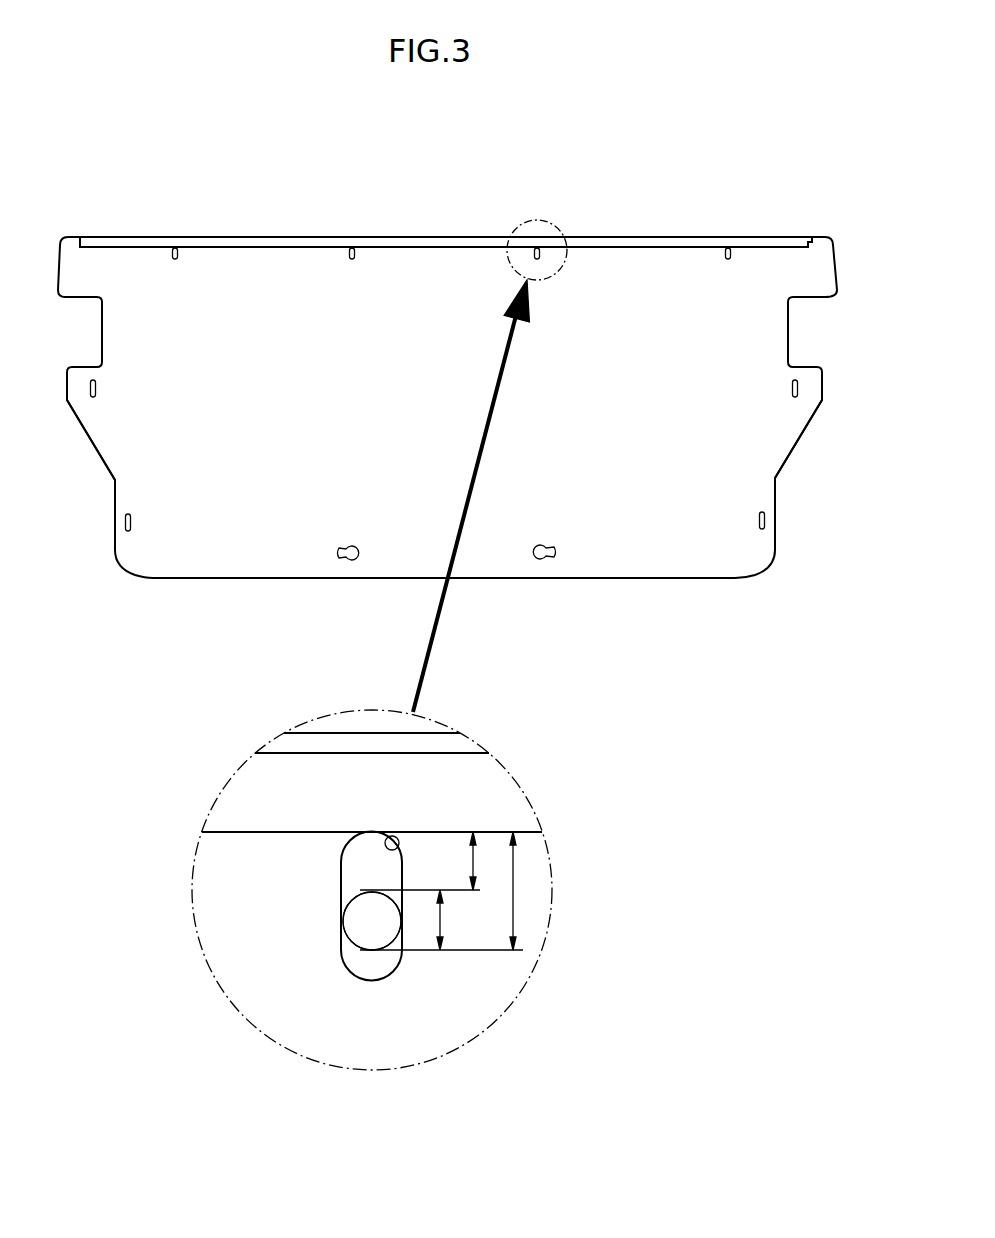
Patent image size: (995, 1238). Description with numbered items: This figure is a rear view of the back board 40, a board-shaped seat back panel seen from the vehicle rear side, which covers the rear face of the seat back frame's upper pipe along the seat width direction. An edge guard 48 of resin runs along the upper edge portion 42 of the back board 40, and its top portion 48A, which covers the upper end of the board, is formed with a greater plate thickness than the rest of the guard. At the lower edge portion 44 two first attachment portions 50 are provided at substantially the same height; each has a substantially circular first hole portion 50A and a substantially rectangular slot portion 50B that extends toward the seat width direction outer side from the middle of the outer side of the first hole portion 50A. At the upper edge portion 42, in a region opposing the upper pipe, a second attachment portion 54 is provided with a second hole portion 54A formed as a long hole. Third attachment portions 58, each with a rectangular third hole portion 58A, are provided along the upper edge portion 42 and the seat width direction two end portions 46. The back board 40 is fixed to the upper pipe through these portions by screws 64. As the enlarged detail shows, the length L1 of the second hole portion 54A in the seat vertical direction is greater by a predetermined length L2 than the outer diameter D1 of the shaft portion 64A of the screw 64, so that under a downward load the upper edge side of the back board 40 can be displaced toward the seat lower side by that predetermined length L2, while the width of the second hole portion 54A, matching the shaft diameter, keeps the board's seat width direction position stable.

The back board 40 is at (838, 262).
The upper edge portion 42 is at (764, 251).
The lower edge portion 44 is at (668, 580).
The seat width direction two end portions 46 is at (108, 438).
The edge guard 48 is at (265, 238).
The top portion 48A is at (657, 237).
The first attachment portion 50 is at (349, 546).
The first hole portion 50A is at (540, 560).
The slot portion 50B is at (556, 549).
The second attachment portion 54 is at (540, 262).
The second hole portion 54A is at (542, 255).
The third attachment portion 58 is at (178, 258).
The third hole portion 58A is at (356, 251).
The screw 64 is at (372, 921).
The shaft portion 64A is at (368, 936).
The length L1 is at (451, 891).
The predetermined length L2 is at (487, 861).
The outer diameter D1 is at (456, 920).